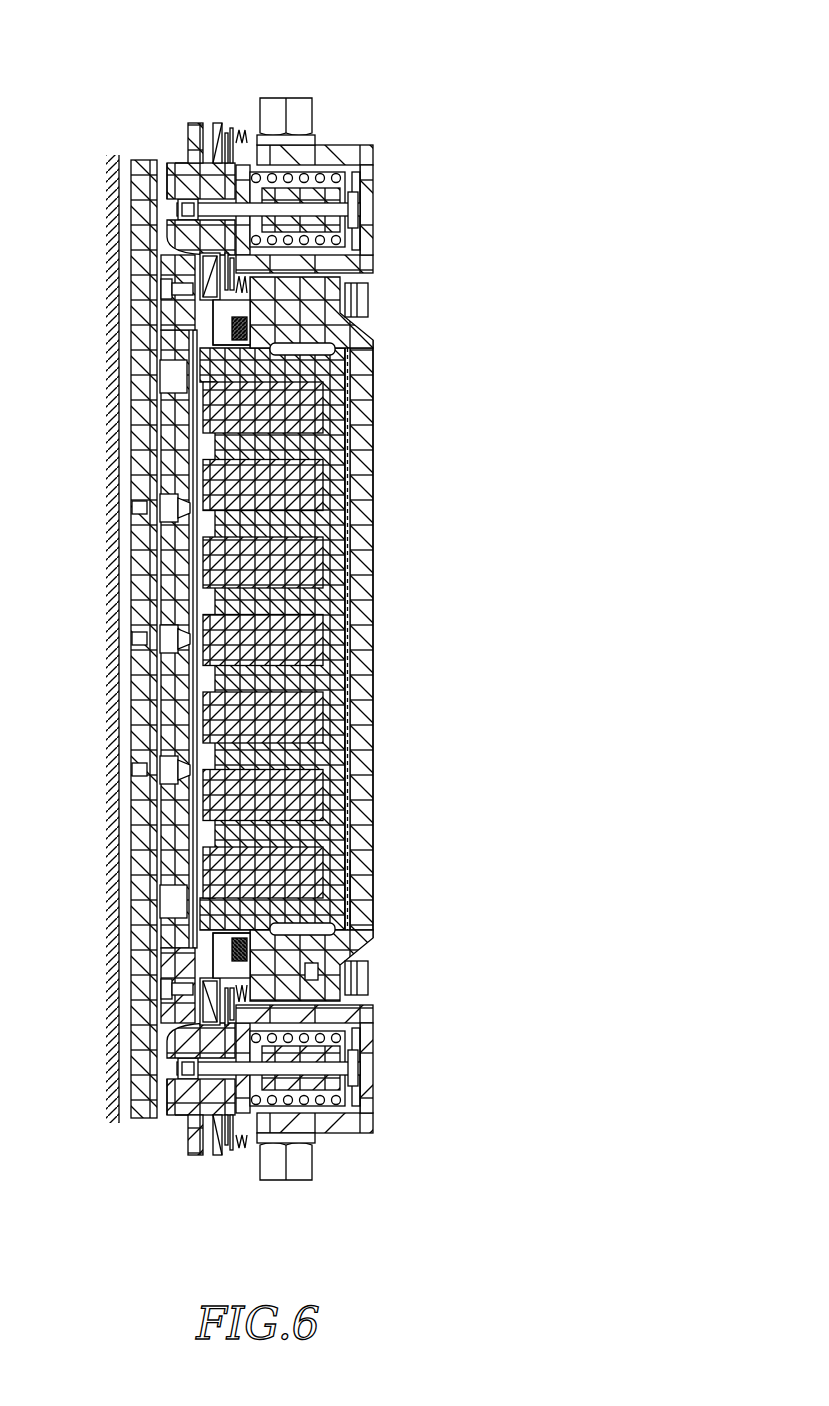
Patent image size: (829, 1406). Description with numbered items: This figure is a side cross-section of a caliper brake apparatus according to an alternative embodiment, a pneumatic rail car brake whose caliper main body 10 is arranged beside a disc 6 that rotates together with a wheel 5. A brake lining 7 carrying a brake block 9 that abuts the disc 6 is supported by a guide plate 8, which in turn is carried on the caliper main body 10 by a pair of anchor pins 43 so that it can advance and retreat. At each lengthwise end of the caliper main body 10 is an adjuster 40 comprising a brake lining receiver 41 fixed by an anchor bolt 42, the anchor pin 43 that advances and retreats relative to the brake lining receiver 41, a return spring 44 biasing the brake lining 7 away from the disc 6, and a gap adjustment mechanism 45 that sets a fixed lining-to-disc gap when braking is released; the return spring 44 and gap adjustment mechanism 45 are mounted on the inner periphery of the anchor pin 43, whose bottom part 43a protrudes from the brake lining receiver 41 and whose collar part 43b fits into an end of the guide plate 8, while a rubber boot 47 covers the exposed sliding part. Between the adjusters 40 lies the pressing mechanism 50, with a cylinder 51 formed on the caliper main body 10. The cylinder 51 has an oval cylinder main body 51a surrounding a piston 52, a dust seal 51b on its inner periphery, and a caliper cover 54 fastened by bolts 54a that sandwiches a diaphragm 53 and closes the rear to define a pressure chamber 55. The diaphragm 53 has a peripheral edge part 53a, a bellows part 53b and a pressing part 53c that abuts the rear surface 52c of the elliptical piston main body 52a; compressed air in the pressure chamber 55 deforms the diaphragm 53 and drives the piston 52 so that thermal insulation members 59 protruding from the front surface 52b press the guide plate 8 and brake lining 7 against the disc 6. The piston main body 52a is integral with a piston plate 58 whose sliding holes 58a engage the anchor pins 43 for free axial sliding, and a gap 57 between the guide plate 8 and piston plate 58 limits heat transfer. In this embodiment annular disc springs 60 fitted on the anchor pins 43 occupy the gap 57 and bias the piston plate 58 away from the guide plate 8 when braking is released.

The wheel 5 is at (75, 492).
The disc 6 is at (123, 517).
The brake lining 7 is at (131, 660).
The guide plate 8 is at (192, 128).
The brake block 9 is at (130, 602).
The caliper main body 10 is at (416, 93).
The adjuster 40 is at (363, 130).
The brake lining receiver 41 is at (330, 150).
The anchor bolt 42 is at (278, 115).
The anchor pin 43 is at (192, 165).
The bottom part 43a is at (177, 177).
The collar part 43b is at (197, 158).
The return spring 44 is at (342, 176).
The gap adjustment mechanism 45 is at (377, 215).
The rubber boot 47 is at (243, 126).
The pressing mechanism 50 is at (376, 413).
The cylinder 51 is at (230, 300).
The cylinder main body 51a is at (240, 330).
The dust seal 51b is at (233, 350).
The piston 52 is at (350, 550).
The piston main body 52a is at (338, 588).
The front surface 52b is at (218, 920).
The rear surface 52c is at (350, 635).
The diaphragm 53 is at (357, 852).
The peripheral edge part 53a is at (318, 972).
The bellows part 53b is at (283, 930).
The pressing part 53c is at (352, 882).
The caliper cover 54 is at (362, 358).
The bolt 54a is at (357, 300).
The pressure chamber 55 is at (353, 463).
The gap 57 is at (218, 303).
The piston plate 58 is at (221, 143).
The sliding hole 58a is at (225, 260).
The thermal insulation member 59 is at (305, 725).
The disc spring 60 is at (212, 138).